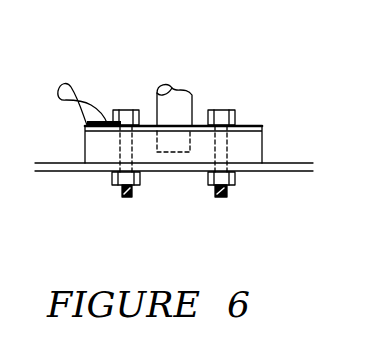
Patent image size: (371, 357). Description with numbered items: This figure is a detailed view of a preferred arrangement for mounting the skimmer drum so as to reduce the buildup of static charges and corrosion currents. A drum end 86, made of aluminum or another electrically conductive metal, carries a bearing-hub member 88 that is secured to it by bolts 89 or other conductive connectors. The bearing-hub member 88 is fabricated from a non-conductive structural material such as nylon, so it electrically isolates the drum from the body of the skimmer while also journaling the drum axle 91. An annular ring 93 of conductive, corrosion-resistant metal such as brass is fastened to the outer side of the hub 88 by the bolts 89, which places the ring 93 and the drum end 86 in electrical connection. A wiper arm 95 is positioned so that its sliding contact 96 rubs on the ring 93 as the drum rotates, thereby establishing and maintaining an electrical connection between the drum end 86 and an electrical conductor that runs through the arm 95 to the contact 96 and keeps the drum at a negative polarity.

The drum end 86 is at (277, 165).
The bearing-hub member 88 is at (252, 142).
The bolts 89 is at (122, 117).
The drum axle 91 is at (181, 102).
The annular ring 93 is at (252, 125).
The wiper arm 95 is at (67, 90).
The sliding contact 96 is at (103, 121).